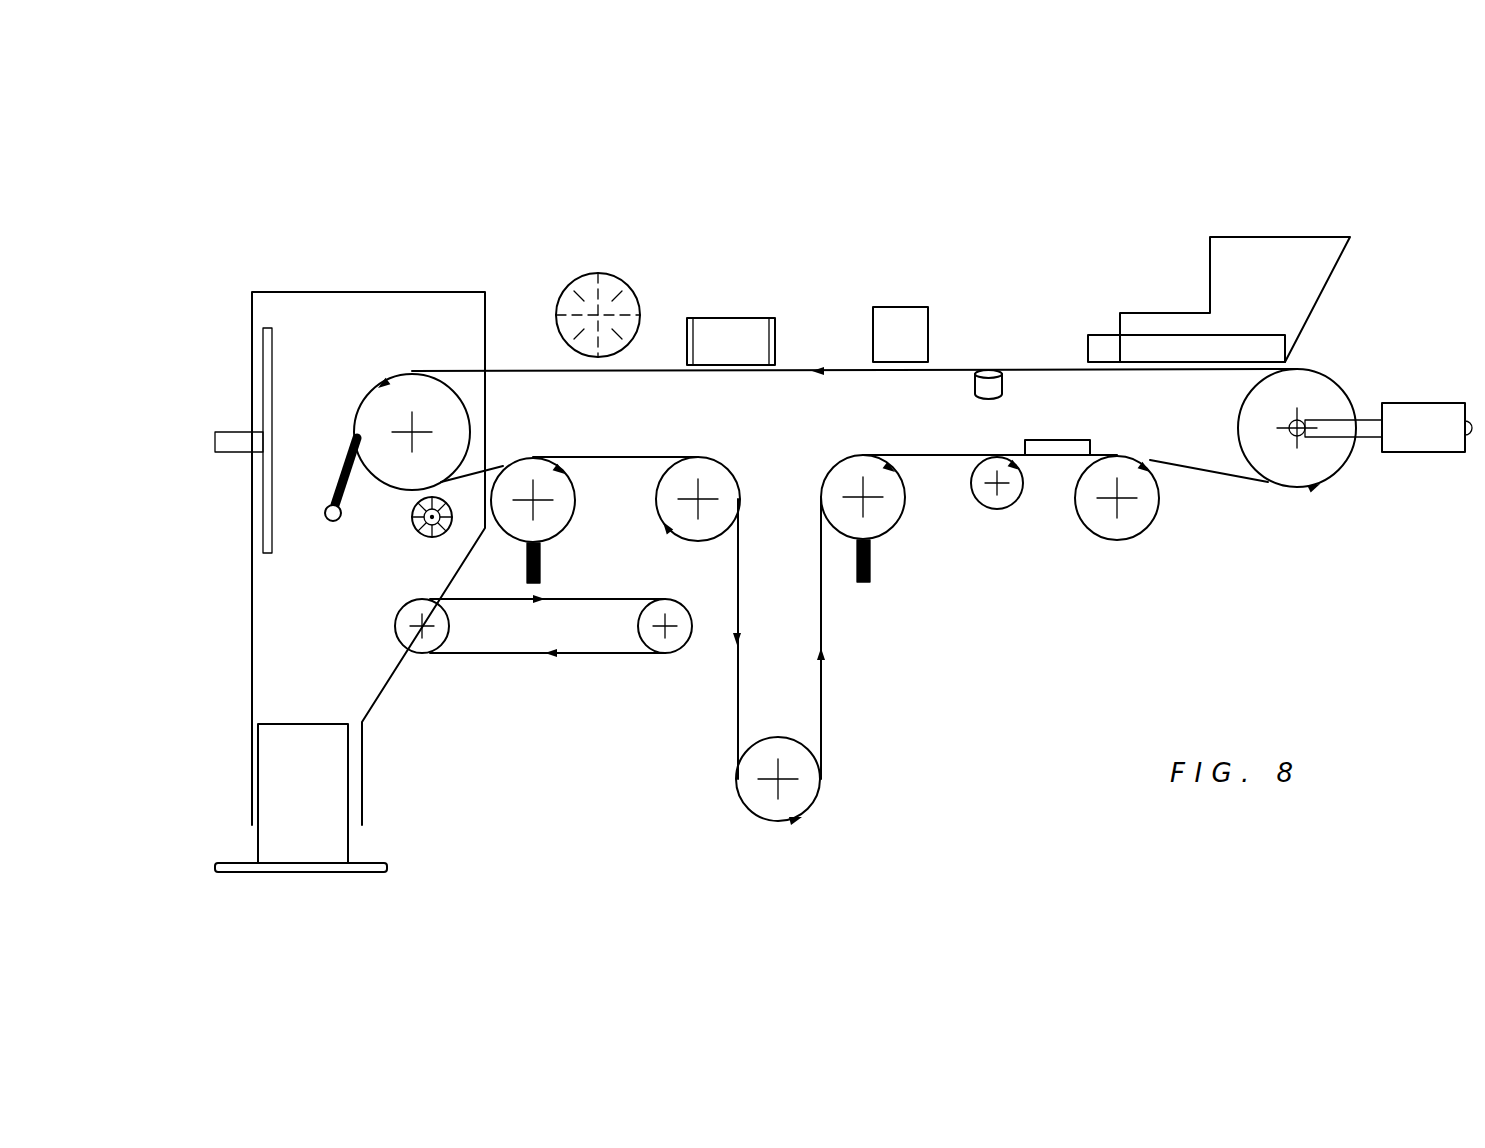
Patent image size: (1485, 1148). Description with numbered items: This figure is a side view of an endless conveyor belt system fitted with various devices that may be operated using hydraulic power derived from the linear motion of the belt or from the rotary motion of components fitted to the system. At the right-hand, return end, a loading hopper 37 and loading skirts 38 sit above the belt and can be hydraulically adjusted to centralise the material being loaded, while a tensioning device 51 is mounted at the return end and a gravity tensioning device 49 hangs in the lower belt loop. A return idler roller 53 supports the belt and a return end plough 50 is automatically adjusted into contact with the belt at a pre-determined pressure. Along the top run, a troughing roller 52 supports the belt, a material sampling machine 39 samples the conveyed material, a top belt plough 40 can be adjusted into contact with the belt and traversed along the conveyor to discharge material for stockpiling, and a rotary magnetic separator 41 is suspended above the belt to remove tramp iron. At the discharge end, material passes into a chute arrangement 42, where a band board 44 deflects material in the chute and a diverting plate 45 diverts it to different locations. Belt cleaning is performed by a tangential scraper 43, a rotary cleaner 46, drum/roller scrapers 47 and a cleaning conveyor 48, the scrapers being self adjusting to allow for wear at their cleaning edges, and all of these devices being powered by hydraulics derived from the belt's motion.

The loading hopper 37 is at (1303, 232).
The loading skirts 38 is at (1103, 330).
The material sampling machine 39 is at (898, 303).
The top belt plough 40 is at (748, 318).
The rotary magnetic separator 41 is at (591, 265).
The chute arrangement 42 is at (418, 290).
The tangential scraper 43 is at (337, 455).
The band board 44 is at (264, 325).
The diverting plate 45 is at (351, 843).
The rotary cleaner 46 is at (407, 528).
The drum/roller scraper 47 is at (898, 633).
The cleaning conveyor 48 is at (662, 655).
The gravity tensioning device 49 is at (827, 807).
The return end plough 50 is at (1063, 457).
The tensioning device 51 is at (1390, 457).
The troughing roller 52 is at (990, 367).
The return idler roller 53 is at (1006, 515).